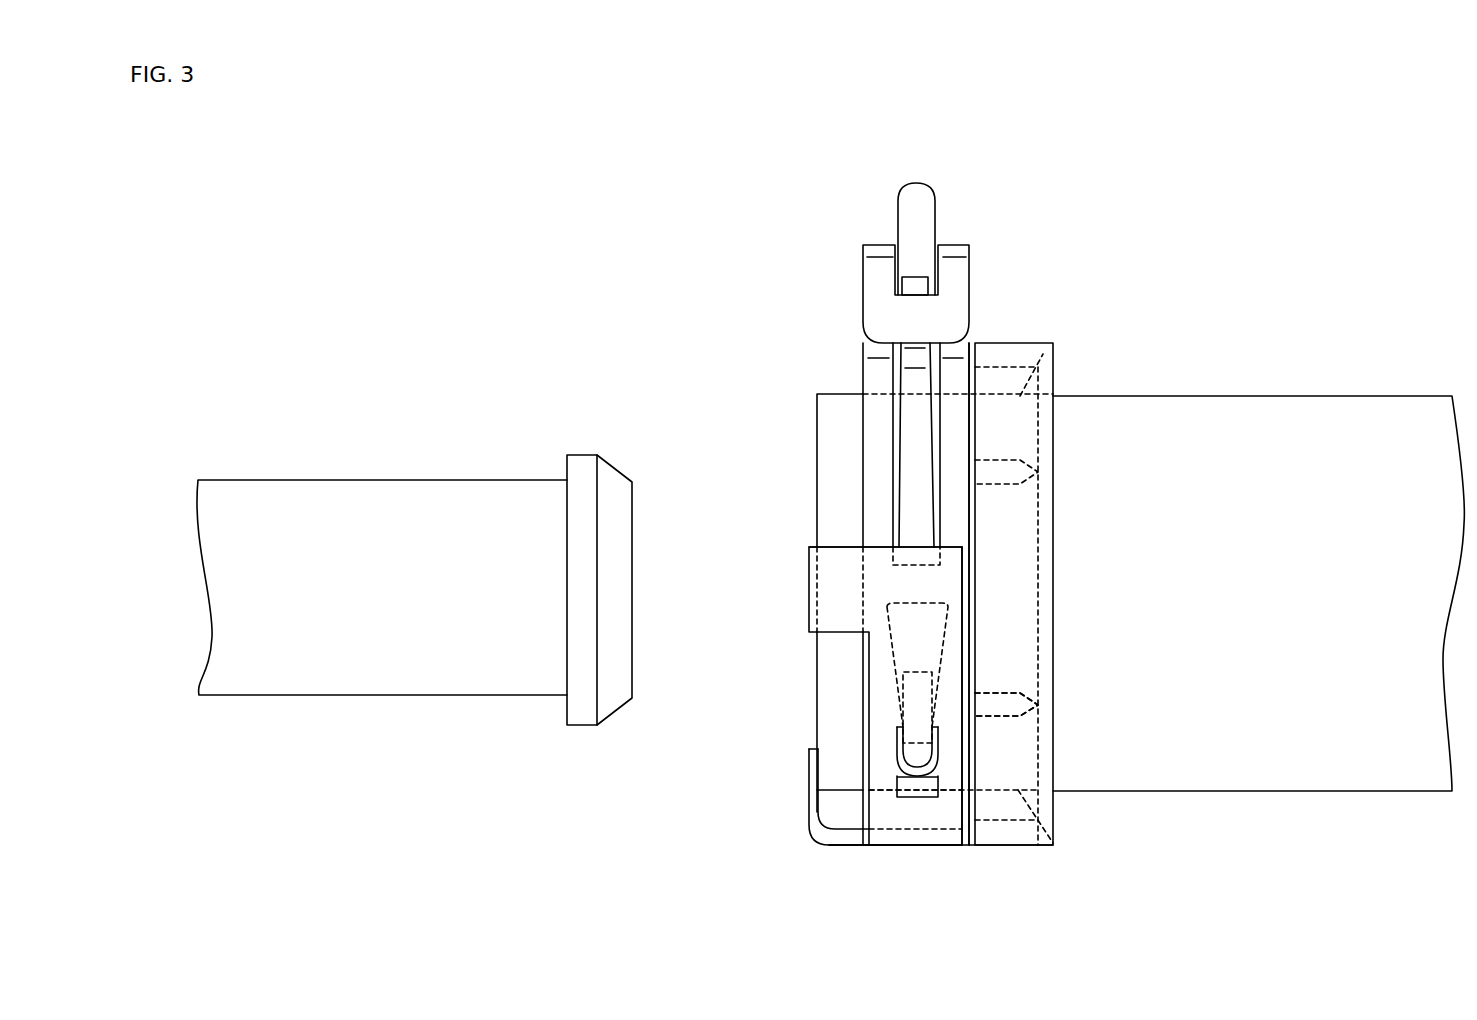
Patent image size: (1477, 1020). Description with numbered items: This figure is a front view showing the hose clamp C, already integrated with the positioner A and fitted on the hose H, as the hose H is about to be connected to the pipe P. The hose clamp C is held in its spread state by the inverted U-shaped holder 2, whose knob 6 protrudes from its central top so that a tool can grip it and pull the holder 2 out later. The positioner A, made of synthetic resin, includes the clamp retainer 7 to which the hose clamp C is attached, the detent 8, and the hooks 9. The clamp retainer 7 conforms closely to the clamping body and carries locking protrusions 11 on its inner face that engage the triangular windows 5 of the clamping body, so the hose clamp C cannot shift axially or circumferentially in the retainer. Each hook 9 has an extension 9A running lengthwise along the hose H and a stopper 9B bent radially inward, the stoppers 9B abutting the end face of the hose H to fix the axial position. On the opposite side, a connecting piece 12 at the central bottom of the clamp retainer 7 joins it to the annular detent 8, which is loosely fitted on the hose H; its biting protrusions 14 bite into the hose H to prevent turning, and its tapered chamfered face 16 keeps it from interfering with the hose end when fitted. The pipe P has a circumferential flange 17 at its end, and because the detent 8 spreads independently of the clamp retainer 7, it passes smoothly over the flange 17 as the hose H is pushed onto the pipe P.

The holder 2 is at (960, 268).
The triangular windows 5 is at (898, 646).
The knob 6 is at (918, 197).
The clamp retainer 7 is at (914, 817).
The detent 8 is at (1017, 763).
The hooks 9 is at (827, 580).
The extension 9A is at (842, 837).
The stopper 9B is at (808, 762).
The locking protrusions 11 is at (913, 750).
The connecting piece 12 is at (966, 848).
The biting protrusions 14 is at (1015, 688).
The tapered chamfered face 16 is at (1053, 357).
The circumferential flange 17 is at (578, 460).
The positioner A is at (835, 542).
The hose clamp C is at (857, 357).
The hose H is at (1271, 412).
The pipe P is at (392, 502).